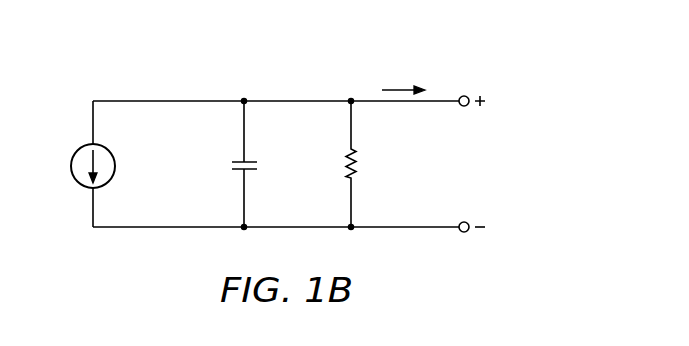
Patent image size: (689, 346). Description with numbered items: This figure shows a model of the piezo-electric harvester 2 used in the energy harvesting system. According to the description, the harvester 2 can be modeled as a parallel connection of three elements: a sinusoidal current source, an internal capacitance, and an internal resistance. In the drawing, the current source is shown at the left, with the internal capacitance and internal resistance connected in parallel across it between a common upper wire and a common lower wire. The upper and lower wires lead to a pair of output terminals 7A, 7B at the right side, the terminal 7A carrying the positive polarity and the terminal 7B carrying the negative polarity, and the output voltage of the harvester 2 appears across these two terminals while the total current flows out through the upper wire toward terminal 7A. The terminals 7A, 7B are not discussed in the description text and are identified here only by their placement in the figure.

The piezo-electric harvester 2 is at (153, 68).
The positive output terminal 7A is at (467, 95).
The negative output terminal 7B is at (467, 233).